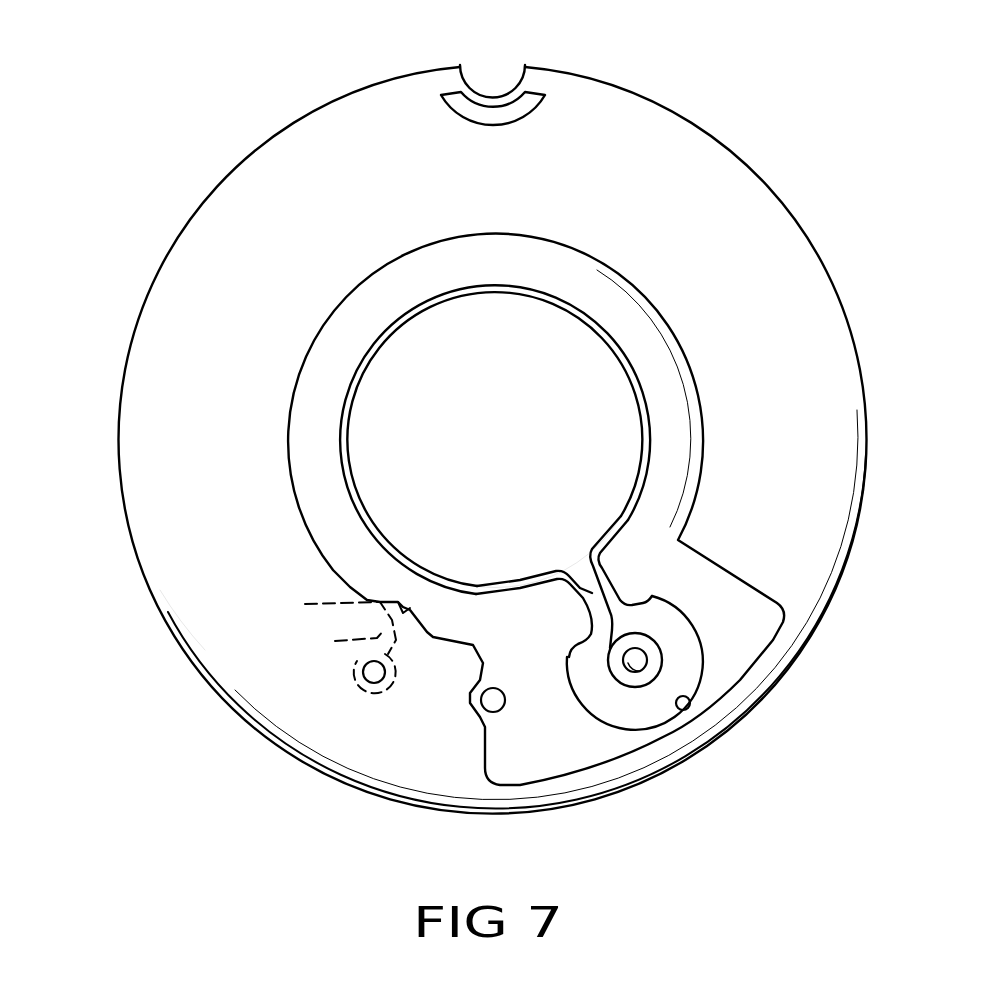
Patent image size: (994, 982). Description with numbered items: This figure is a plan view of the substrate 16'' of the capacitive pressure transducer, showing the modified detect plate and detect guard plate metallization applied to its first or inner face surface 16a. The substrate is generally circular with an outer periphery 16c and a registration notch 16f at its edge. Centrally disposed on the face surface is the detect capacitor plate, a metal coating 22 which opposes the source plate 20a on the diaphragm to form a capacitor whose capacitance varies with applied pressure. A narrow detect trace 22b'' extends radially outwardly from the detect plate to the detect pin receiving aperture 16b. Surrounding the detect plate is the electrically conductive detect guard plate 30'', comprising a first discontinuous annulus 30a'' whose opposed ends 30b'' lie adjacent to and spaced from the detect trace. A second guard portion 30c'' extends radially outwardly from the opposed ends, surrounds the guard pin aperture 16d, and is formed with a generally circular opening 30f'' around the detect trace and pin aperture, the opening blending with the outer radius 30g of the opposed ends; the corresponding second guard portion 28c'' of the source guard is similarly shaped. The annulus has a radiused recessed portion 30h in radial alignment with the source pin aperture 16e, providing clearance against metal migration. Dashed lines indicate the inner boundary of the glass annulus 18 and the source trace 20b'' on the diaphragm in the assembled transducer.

The substrate 16'' is at (481, 440).
The first or inner face surface 16a is at (190, 612).
The detect pin receiving aperture 16b is at (630, 672).
The outer periphery 16c is at (205, 685).
The guard pin aperture 16d is at (487, 714).
The source pin aperture 16e is at (380, 688).
The registration notch 16f is at (513, 82).
The glass annulus 18 is at (333, 642).
The source capacitor plate 20a is at (462, 423).
The source trace 20b'' is at (327, 641).
The metal coating 22 is at (369, 349).
The detect trace 22b'' is at (583, 599).
The second guard portion 28c'' is at (742, 571).
The detect guard plate 30'' is at (488, 509).
The first discontinuous annulus 30a'' is at (430, 398).
The opposed ends 30b'' is at (620, 583).
The second guard portion 30c'' is at (573, 792).
The generally circular opening 30f'' is at (740, 734).
The outer radius 30g is at (652, 597).
The radiused recessed portion 30h is at (417, 613).